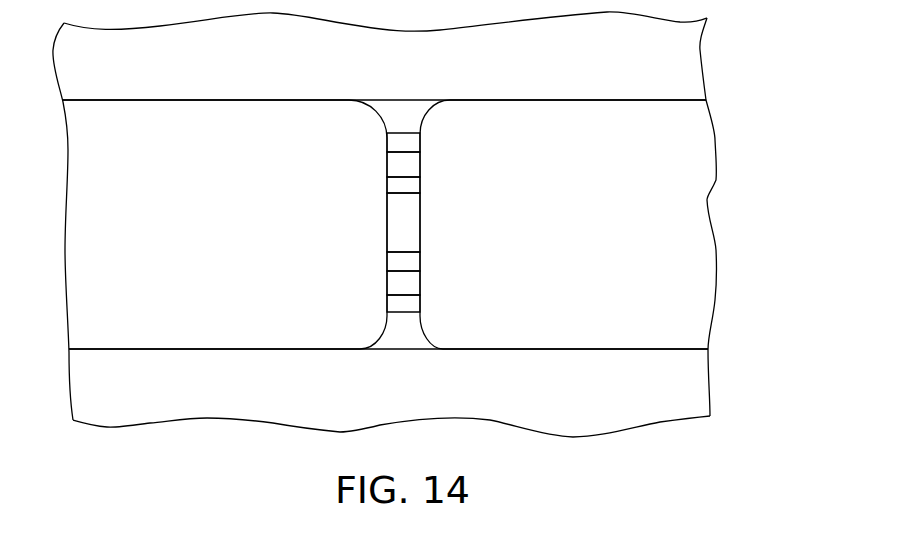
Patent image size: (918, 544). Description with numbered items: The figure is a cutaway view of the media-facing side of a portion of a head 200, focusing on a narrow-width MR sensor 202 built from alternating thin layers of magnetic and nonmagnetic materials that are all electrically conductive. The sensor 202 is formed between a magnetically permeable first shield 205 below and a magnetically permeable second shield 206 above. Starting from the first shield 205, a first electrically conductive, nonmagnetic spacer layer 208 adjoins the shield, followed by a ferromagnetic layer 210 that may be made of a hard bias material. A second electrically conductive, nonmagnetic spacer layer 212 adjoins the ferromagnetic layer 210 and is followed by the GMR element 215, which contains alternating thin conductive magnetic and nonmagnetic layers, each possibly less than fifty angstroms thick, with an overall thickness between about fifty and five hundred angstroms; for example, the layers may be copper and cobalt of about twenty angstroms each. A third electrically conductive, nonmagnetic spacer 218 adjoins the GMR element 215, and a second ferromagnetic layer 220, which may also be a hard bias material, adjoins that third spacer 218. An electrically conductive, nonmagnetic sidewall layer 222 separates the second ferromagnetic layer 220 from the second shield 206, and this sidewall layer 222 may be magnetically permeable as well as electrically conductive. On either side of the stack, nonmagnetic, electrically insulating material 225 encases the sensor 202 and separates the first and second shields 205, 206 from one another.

The head 200 is at (725, 405).
The sensor 202 is at (258, 288).
The first shield 205 is at (424, 410).
The second shield 206 is at (367, 70).
The first electrically conductive, nonmagnetic spacer layer 208 is at (420, 304).
The ferromagnetic layer 210 is at (387, 285).
The second electrically conductive, nonmagnetic spacer layer 212 is at (420, 262).
The GMR element 215 is at (387, 224).
The third electrically conductive, nonmagnetic spacer 218 is at (420, 186).
The second ferromagnetic layer 220 is at (387, 164).
The sidewall layer 222 is at (420, 143).
The nonmagnetic, electrically insulating material 225 is at (660, 236).